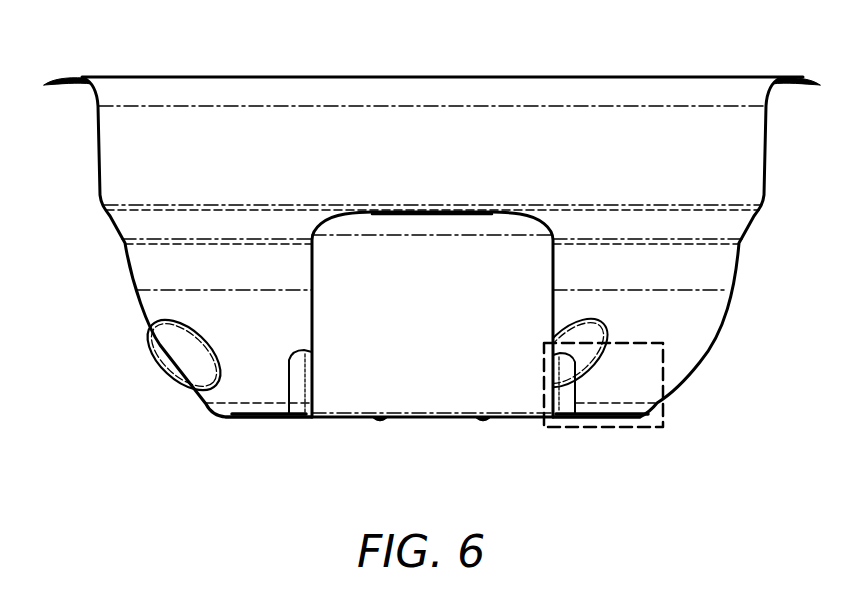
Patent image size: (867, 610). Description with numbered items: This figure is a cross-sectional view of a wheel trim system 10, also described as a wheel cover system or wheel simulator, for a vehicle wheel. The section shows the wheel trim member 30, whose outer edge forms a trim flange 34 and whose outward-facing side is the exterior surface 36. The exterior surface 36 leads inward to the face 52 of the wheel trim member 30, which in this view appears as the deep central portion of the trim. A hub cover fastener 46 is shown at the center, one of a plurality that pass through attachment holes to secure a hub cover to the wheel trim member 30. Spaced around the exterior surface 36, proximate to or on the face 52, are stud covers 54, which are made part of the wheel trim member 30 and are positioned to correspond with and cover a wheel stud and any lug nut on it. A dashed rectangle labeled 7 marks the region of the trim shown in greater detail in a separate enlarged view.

The wheel trim system 10 is at (106, 475).
The wheel trim member 30 is at (114, 290).
The trim flange 34 is at (45, 86).
The exterior surface 36 is at (124, 145).
The hub cover fastener 46 is at (335, 213).
The face 52 is at (222, 416).
The stud cover 54 is at (290, 377).
The detail region of FIG. 7 is at (613, 429).